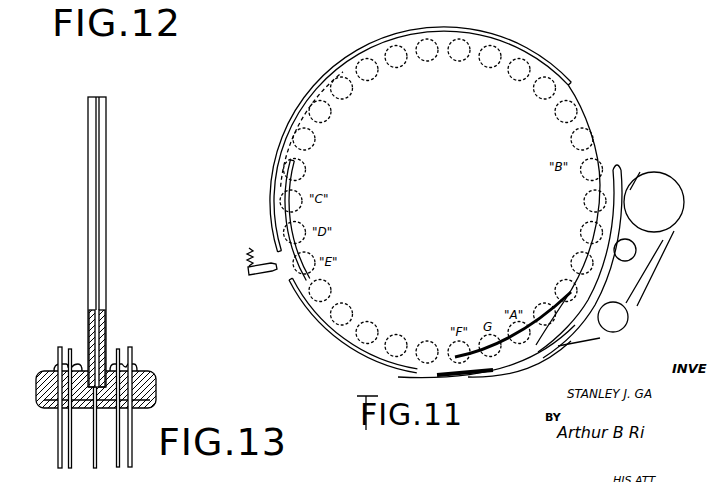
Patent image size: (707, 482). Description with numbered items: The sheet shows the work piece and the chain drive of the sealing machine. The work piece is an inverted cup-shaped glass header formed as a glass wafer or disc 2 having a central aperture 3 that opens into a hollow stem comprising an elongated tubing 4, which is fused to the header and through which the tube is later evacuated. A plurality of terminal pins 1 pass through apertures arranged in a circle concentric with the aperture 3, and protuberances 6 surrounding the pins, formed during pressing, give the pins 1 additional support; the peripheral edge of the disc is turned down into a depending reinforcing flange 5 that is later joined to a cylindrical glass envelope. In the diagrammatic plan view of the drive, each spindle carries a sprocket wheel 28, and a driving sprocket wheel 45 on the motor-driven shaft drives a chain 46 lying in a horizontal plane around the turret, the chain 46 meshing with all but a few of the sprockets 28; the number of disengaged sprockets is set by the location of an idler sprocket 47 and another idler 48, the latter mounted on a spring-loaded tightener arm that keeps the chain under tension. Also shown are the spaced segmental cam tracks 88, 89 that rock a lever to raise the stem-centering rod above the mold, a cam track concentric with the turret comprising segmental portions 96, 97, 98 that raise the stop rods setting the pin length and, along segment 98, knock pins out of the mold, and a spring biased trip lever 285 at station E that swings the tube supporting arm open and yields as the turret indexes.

In FIG. 13, the terminal pins 1 is at (133, 353).
In FIG. 13, the glass wafer or disc 2 is at (150, 376).
In FIG. 13, the central aperture 3 is at (100, 360).
In FIG. 13, the elongated tubing 4 is at (104, 303).
In FIG. 13, the reinforcing flange 5 is at (153, 401).
In FIG. 13, the protuberances 6 is at (56, 372).
In FIG. 11, the sprocket wheel 28 is at (369, 81).
In FIG. 11, the driving sprocket wheel 45 is at (664, 230).
In FIG. 11, the chain 46 is at (660, 272).
In FIG. 11, the idler sprocket 47 is at (628, 316).
In FIG. 11, the idler 48 is at (636, 256).
In FIG. 11, the segmental cam track 88 is at (316, 277).
In FIG. 11, the segmental cam track 89 is at (576, 273).
In FIG. 11, the cam segment 96 is at (281, 164).
In FIG. 11, the cam track segmental portion 97 is at (349, 342).
In FIG. 11, the cam track segment 98 is at (472, 380).
In FIG. 11, the trip lever 285 is at (250, 272).